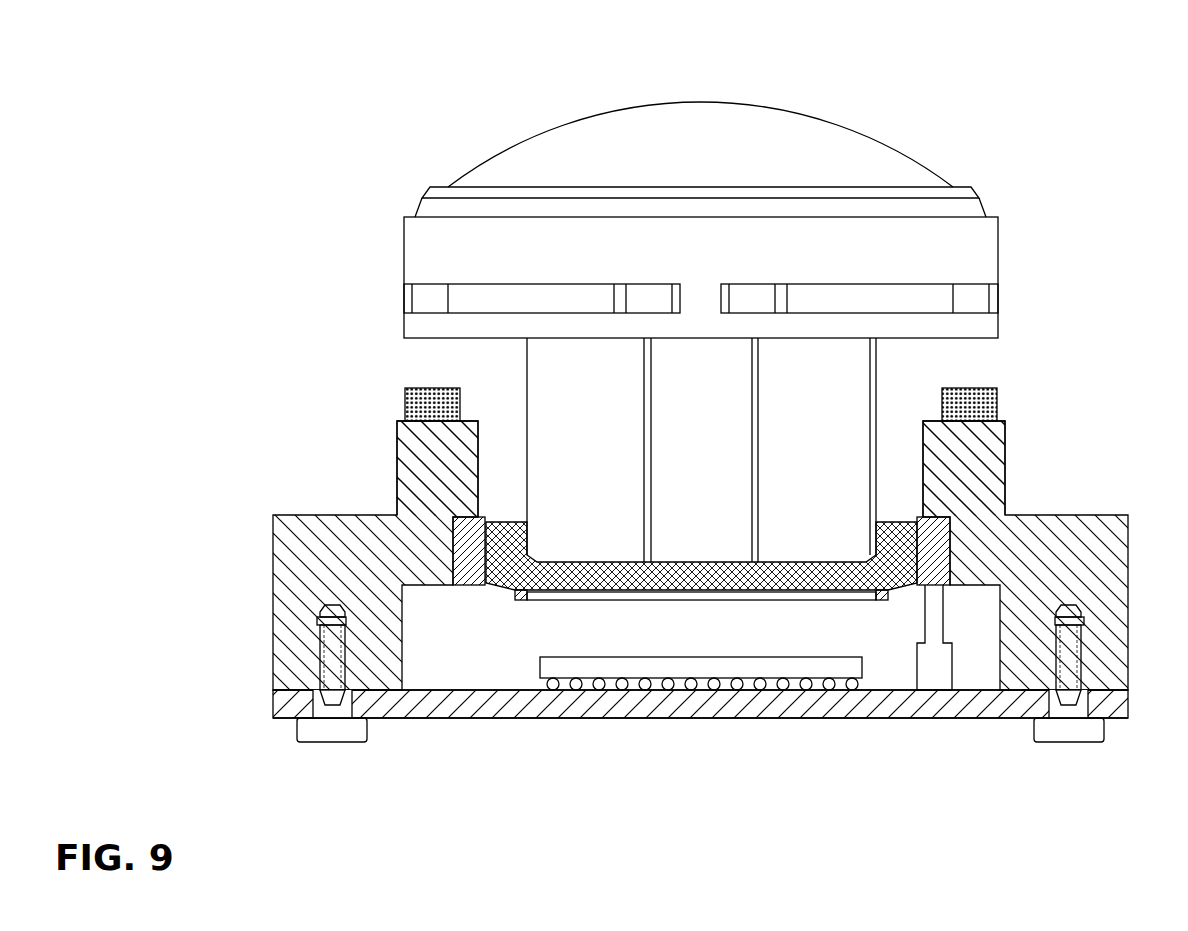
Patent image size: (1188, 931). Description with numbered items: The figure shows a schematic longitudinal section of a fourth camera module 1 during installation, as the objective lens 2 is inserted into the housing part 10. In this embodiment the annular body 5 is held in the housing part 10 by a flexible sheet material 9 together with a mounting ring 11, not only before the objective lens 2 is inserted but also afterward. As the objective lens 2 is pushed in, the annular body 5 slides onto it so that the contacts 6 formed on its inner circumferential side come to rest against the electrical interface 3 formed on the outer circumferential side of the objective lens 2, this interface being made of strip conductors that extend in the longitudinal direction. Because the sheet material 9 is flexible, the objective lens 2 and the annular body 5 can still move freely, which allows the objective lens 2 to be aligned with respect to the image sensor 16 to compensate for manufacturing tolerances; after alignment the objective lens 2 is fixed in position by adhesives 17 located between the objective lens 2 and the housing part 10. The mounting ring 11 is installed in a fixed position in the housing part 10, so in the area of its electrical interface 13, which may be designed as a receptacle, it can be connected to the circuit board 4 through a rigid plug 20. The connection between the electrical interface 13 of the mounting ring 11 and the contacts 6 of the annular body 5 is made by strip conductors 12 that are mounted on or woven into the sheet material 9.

The camera module 1 is at (917, 104).
The objective lens 2 is at (626, 143).
The electrical interface 3 is at (877, 391).
The circuit board 4 is at (605, 700).
The annular body 5 is at (513, 598).
The contacts 6 is at (886, 597).
The flexible sheet material 9 is at (507, 533).
The housing part 10 is at (435, 444).
The mounting ring 11 is at (903, 578).
The strip conductors 12 is at (935, 530).
The electrical interface 13 is at (953, 578).
The image sensor 16 is at (770, 668).
The adhesives 17 is at (405, 402).
The plug 20 is at (933, 611).